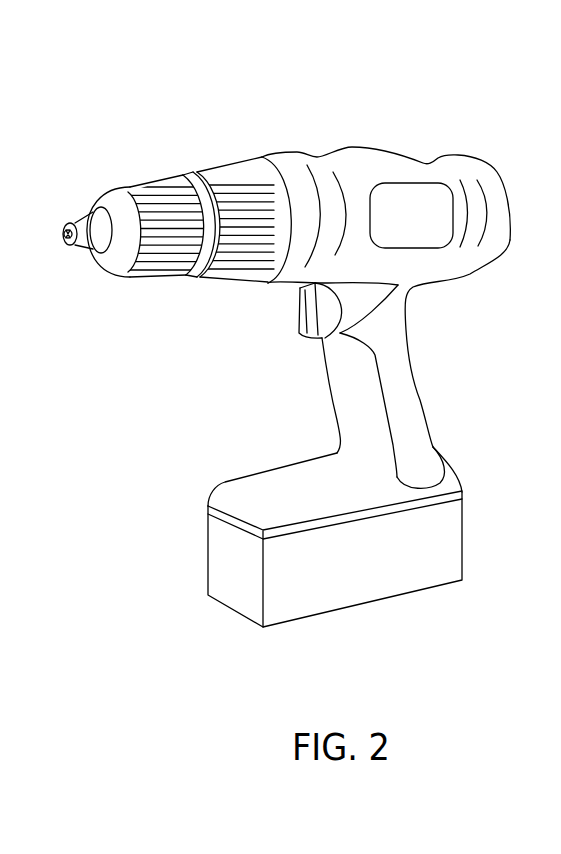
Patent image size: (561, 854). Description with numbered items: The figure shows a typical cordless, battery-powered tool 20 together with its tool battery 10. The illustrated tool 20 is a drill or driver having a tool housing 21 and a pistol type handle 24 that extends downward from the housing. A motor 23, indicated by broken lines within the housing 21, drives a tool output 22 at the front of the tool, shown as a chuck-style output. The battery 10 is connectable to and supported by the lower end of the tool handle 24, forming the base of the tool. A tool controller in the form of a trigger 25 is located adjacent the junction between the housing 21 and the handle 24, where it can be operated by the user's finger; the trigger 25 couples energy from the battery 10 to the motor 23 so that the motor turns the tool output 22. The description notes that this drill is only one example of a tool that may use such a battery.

The cordless tool 20 is at (465, 110).
The tool housing 21 is at (360, 163).
The tool output 22 is at (164, 240).
The motor 23 is at (430, 213).
The pistol type handle 24 is at (407, 397).
The trigger 25 is at (323, 312).
The tool battery 10 is at (427, 567).